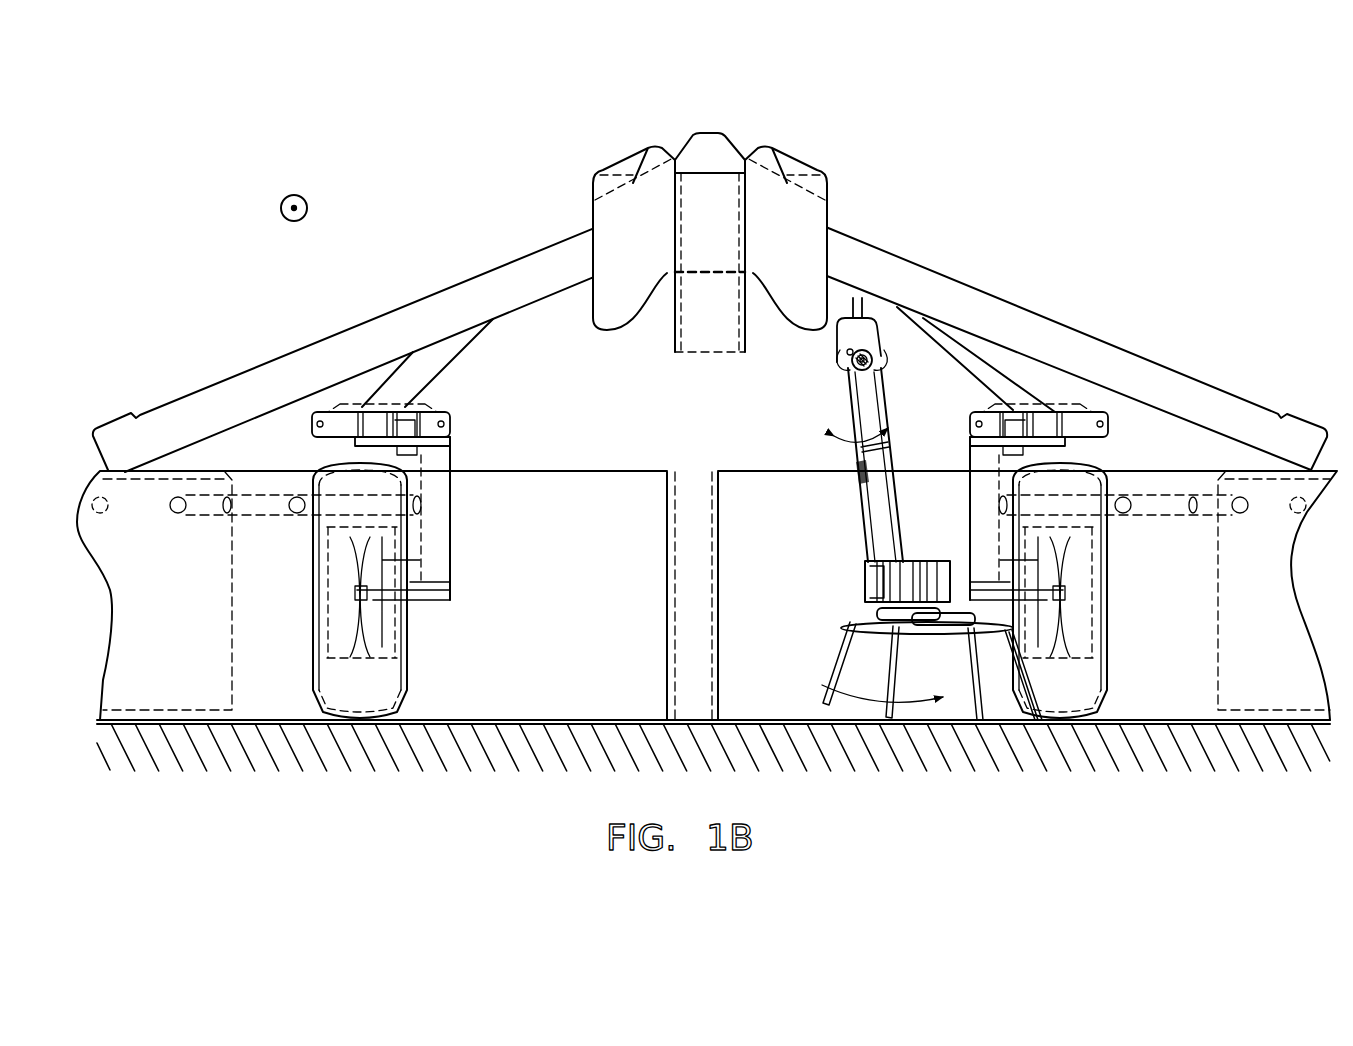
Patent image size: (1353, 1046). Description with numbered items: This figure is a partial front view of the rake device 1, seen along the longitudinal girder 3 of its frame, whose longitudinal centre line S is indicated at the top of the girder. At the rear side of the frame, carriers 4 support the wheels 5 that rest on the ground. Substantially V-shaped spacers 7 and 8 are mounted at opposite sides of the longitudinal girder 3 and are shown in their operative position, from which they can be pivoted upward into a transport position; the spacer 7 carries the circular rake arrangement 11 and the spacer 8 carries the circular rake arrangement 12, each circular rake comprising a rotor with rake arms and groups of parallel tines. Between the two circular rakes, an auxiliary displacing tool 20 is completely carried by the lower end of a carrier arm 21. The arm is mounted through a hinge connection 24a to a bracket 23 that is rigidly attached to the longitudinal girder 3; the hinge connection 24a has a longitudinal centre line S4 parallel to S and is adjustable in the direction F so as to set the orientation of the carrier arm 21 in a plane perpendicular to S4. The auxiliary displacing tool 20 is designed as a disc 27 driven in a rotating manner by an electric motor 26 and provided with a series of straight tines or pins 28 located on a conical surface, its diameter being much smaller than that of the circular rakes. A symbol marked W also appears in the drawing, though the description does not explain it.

The rake device 1 is at (955, 177).
The longitudinal girder 3 is at (690, 163).
The carriers 4 is at (425, 365).
The wheels 5 is at (357, 692).
The spacer 7 is at (473, 292).
The spacer 8 is at (1137, 361).
The circular rake arrangement 11 is at (590, 487).
The circular rake arrangement 12 is at (810, 480).
The auxiliary displacing tool 20 is at (845, 606).
The carrier arm 21 is at (890, 482).
The bracket 23 is at (870, 313).
The hinge connection 24a is at (882, 367).
The electric motor 26 is at (940, 588).
The disc 27 is at (870, 626).
The tines or pins 28 is at (835, 670).
The longitudinal centre line S is at (710, 220).
The longitudinal centre line S4 is at (840, 345).
The direction W is at (316, 211).
The direction F is at (871, 431).